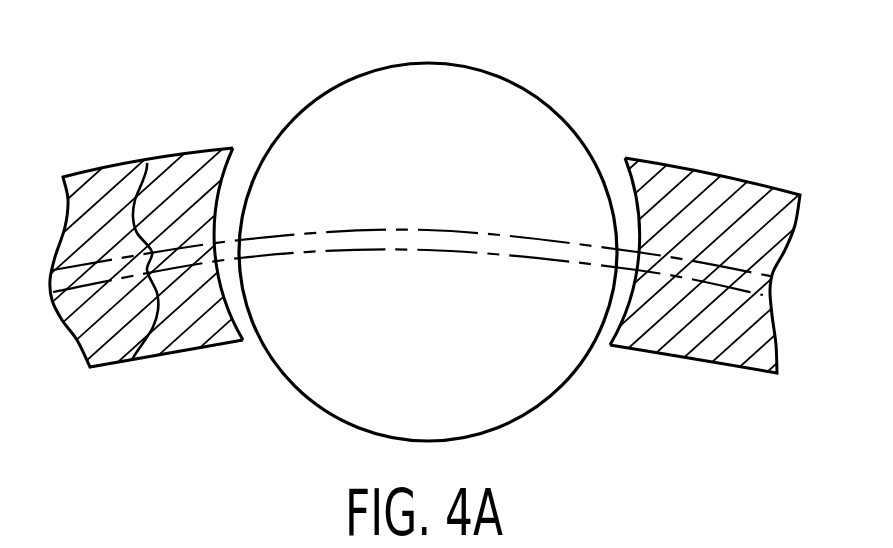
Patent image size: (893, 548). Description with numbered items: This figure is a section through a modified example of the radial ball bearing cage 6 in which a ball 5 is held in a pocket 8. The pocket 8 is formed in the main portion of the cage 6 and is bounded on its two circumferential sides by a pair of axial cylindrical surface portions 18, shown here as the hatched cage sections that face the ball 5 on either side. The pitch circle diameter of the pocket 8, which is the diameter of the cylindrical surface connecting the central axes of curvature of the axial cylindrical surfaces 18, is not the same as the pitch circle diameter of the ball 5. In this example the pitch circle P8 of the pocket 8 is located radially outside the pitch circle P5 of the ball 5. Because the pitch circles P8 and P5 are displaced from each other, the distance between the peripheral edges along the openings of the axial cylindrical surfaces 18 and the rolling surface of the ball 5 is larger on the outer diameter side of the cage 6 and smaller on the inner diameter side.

The ball 5 is at (405, 78).
The cage 6 is at (687, 150).
The axial cylindrical surface portions 18 is at (222, 183).
The pocket 8 is at (634, 286).
The pitch circle of the ball P5 is at (147, 163).
The pitch circle of the pocket P8 is at (132, 360).